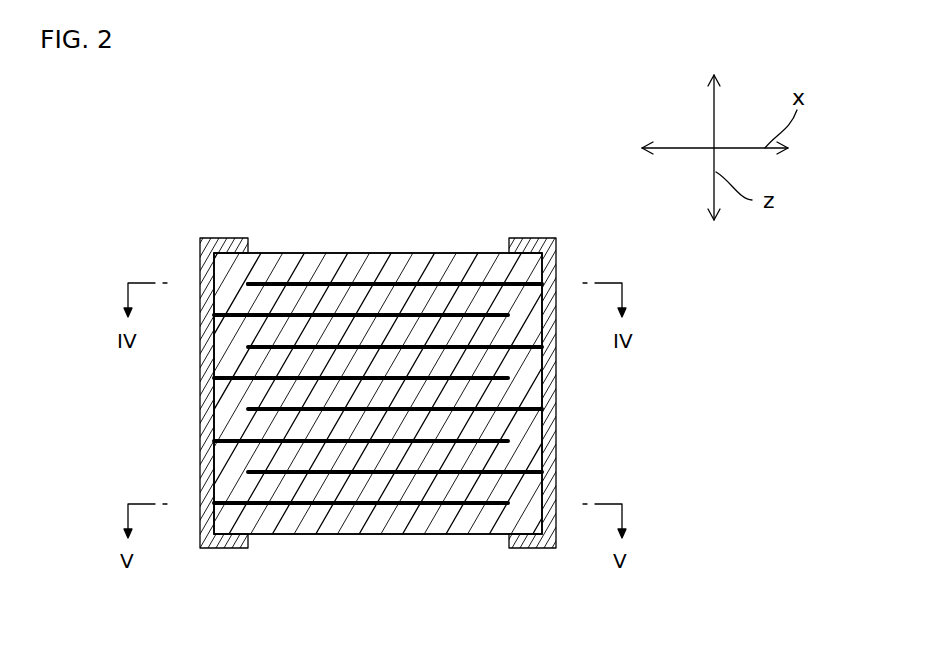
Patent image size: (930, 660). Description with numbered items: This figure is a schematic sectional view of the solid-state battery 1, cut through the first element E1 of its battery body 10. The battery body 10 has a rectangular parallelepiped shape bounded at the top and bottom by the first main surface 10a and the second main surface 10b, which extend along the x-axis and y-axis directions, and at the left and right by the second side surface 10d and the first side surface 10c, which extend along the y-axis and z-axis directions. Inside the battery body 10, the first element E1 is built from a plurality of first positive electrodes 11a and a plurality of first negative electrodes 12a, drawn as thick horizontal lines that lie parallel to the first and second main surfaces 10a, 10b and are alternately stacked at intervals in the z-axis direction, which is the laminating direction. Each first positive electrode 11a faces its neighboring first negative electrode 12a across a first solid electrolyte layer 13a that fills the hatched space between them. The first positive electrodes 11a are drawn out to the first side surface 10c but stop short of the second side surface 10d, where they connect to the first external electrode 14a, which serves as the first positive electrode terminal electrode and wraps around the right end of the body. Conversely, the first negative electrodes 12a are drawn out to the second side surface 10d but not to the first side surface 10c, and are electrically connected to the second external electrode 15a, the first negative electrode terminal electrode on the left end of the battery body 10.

The solid-state battery 1 is at (377, 366).
The battery body 10 is at (375, 377).
The first main surface 10a is at (272, 253).
The second main surface 10b is at (393, 537).
The first side surface 10c is at (542, 443).
The second side surface 10d is at (214, 435).
The first positive electrode 11a is at (421, 283).
The first negative electrode 12a is at (490, 318).
The first solid electrolyte layer 13a is at (478, 300).
The first external electrode 14a is at (556, 403).
The second external electrode 15a is at (200, 371).
The first element E1 is at (328, 278).